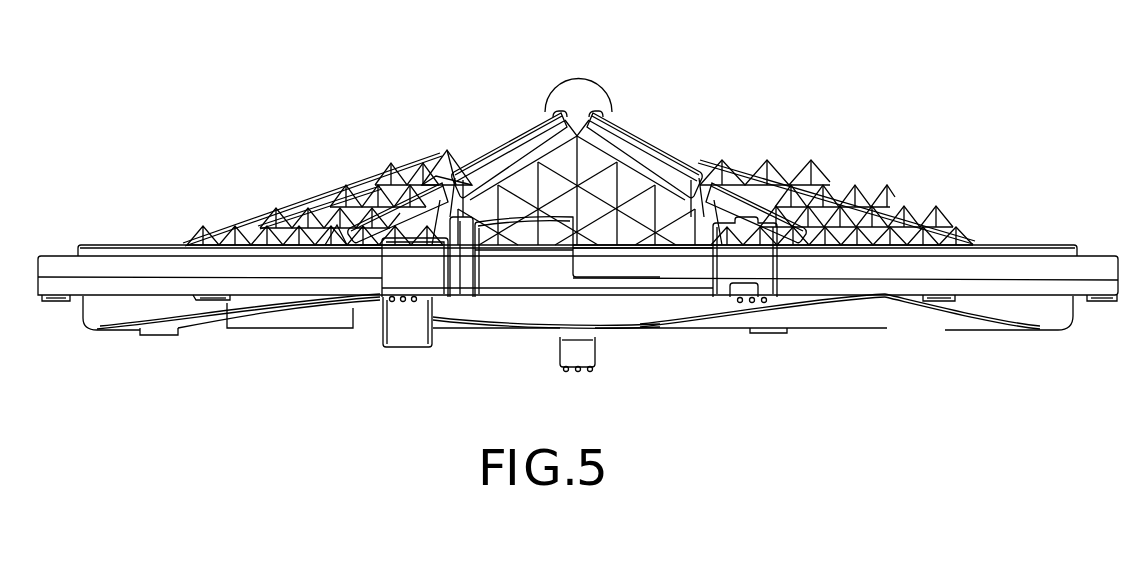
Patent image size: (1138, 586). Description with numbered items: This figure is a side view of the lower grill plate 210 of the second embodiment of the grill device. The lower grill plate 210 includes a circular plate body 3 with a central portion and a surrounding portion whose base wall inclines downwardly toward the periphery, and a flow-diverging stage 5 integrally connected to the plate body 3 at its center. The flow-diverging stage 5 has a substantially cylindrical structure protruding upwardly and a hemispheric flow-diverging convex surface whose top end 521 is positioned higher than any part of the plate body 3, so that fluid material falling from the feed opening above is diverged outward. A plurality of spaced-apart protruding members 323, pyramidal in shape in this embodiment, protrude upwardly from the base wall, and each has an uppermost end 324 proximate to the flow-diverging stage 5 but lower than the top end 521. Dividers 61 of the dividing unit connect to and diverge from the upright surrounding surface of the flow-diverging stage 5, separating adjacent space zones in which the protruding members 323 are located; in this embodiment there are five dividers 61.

The plate body 3 is at (922, 282).
The flow-diverging stage 5 is at (578, 118).
The dividers 61 is at (490, 172).
The lower grill plate 210 is at (844, 160).
The protruding members 323 is at (455, 163).
The uppermost end 324 is at (457, 155).
The top end 521 is at (580, 82).